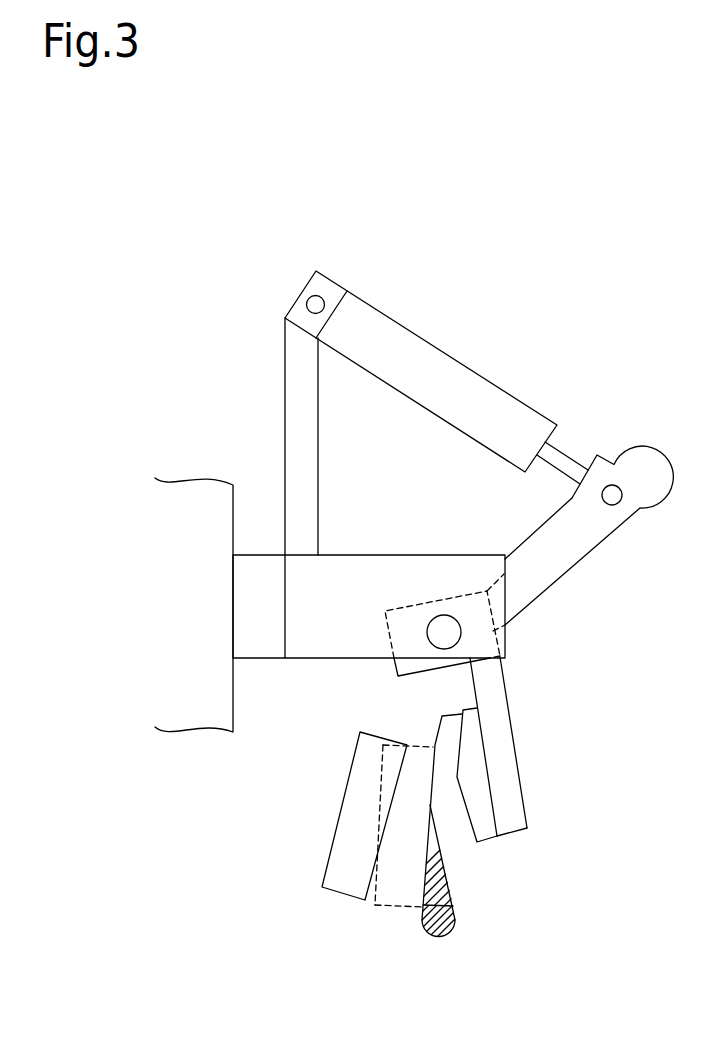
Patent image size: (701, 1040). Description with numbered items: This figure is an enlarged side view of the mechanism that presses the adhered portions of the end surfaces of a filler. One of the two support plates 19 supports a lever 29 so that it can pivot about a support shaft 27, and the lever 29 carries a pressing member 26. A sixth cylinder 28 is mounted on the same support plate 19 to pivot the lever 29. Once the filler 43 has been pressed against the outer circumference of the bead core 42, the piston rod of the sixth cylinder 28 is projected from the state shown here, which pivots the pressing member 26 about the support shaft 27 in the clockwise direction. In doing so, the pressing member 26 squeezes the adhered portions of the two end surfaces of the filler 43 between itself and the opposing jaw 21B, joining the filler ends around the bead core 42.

The support plate 19 is at (233, 688).
The opposing jaw 21B is at (338, 840).
The pressing member 26 is at (480, 782).
The support shaft 27 is at (440, 617).
The sixth cylinder 28 is at (433, 356).
The lever 29 is at (505, 710).
The bead core 42 is at (455, 921).
The filler 43 is at (448, 874).